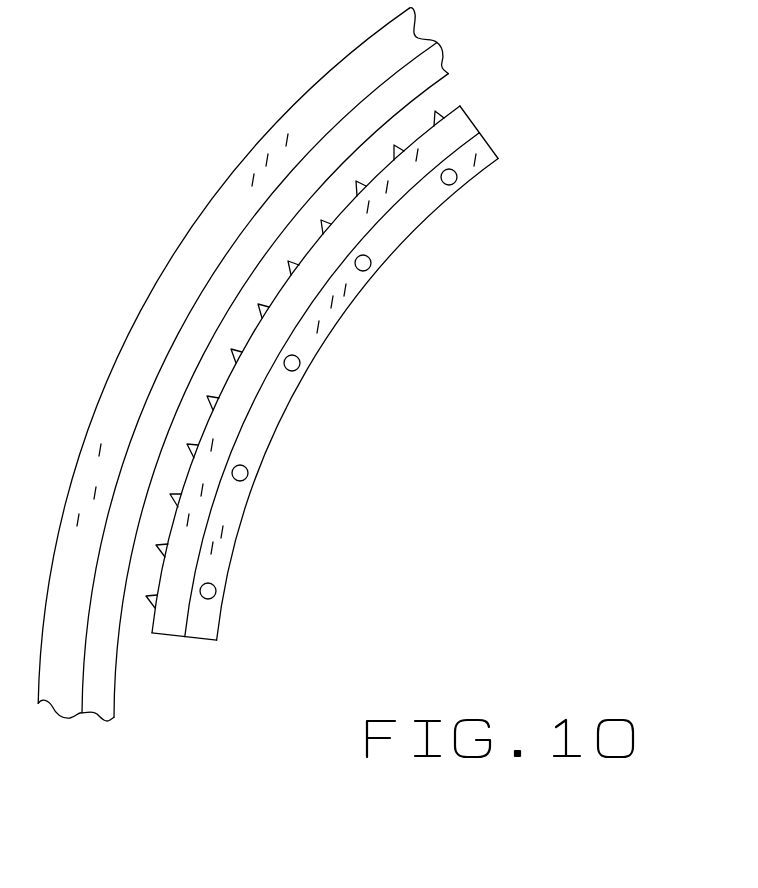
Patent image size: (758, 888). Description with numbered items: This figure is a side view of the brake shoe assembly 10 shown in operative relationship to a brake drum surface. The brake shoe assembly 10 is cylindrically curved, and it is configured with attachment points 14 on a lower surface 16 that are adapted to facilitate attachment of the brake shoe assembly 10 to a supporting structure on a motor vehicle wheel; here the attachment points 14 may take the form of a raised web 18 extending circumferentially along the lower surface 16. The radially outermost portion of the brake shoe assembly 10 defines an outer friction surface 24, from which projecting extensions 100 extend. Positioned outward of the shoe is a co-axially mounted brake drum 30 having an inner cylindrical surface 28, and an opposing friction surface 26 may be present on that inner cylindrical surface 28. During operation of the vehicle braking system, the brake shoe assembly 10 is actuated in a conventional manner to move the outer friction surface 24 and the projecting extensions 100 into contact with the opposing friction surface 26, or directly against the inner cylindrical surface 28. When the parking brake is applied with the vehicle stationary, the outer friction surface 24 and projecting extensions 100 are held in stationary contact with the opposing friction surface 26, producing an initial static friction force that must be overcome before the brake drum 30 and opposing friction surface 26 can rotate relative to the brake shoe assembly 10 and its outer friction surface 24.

The brake shoe assembly 10 is at (440, 248).
The attachment points 14 is at (270, 617).
The lower surface 16 is at (215, 502).
The raised web 18 is at (197, 633).
The outer friction surface 24 is at (233, 377).
The opposing friction surface 26 is at (250, 252).
The inner cylindrical surface 28 is at (358, 98).
The brake drum 30 is at (119, 349).
The projecting extensions 100 is at (262, 306).